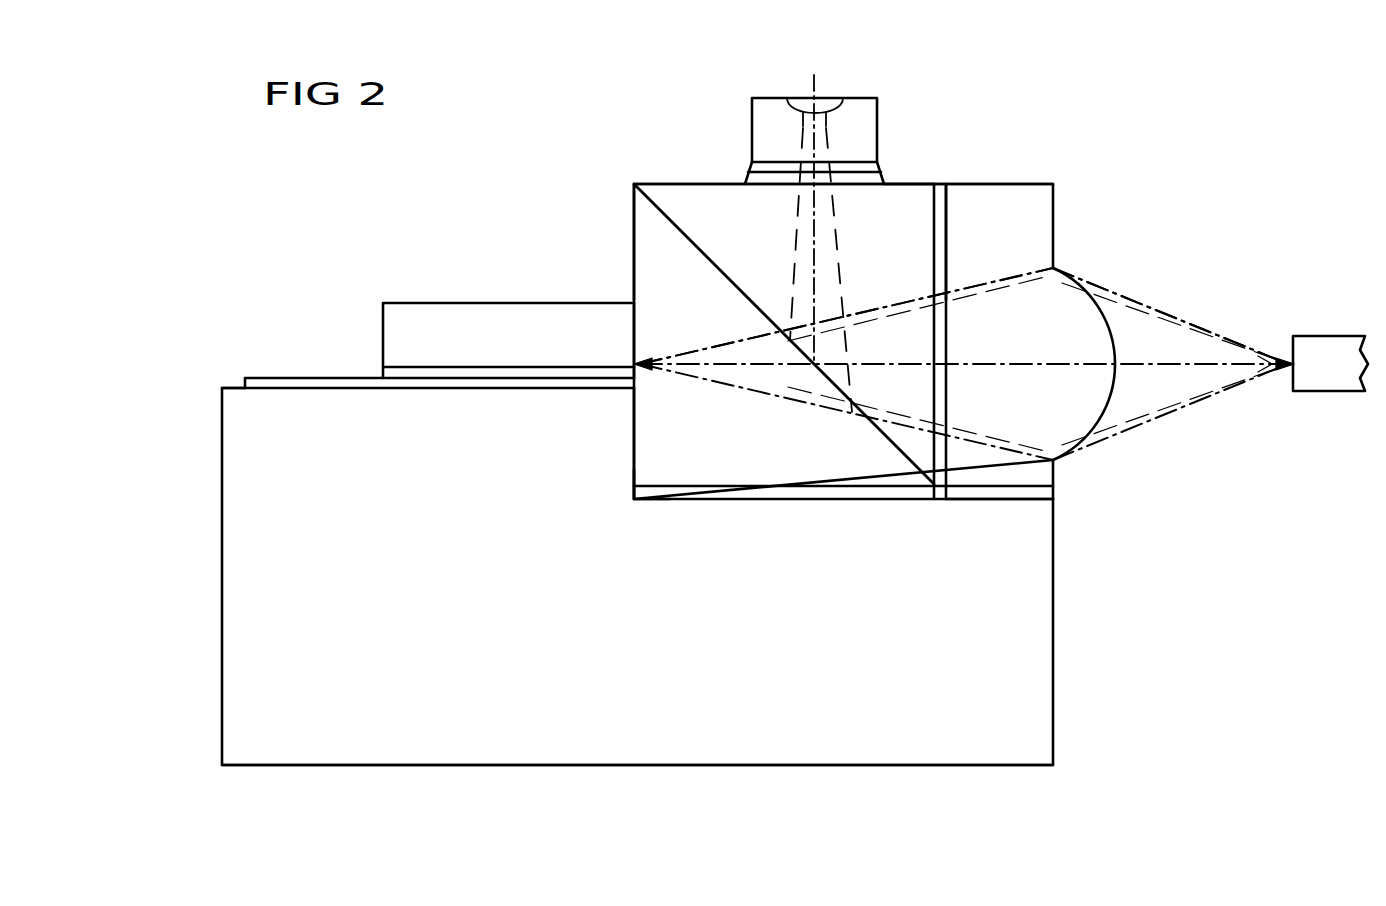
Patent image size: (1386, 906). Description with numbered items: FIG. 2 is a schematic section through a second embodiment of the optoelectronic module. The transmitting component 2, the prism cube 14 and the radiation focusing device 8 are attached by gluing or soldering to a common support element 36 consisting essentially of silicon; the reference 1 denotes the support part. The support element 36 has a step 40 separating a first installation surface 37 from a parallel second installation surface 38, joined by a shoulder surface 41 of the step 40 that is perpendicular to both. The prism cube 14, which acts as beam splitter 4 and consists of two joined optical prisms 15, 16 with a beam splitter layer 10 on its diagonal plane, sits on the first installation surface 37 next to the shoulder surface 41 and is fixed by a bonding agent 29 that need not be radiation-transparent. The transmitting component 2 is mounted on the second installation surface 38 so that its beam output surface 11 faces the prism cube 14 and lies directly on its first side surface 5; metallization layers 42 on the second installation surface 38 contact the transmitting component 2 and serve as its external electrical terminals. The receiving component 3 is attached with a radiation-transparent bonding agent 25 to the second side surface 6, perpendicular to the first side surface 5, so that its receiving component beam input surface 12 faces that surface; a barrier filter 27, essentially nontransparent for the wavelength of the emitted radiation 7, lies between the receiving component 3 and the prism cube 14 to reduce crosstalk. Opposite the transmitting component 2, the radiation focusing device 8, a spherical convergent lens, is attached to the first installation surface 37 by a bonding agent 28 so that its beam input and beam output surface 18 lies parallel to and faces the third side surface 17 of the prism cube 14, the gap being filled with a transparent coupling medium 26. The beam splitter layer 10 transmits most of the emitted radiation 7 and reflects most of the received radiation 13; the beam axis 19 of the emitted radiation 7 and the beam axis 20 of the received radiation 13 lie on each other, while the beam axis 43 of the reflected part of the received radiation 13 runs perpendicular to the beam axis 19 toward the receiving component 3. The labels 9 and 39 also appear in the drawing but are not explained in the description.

The support part 1 is at (1055, 202).
The transmitting component 2 is at (410, 318).
The receiving component 3 is at (858, 97).
The beam splitter 4 is at (673, 167).
The prism cube 14 is at (846, 316).
The first side surface 5 is at (634, 248).
The second side surface 6 is at (706, 182).
The emitted radiation 7 is at (762, 400).
The radiation focusing device 8 is at (1115, 364).
The target 9 is at (1338, 340).
The beam splitter layer 10 is at (702, 255).
The beam output surface 11 is at (634, 334).
The receiving component beam input surface 12 is at (860, 160).
The received radiation 13 is at (1182, 405).
The optical prism 15 is at (901, 205).
The optical prism 16 is at (641, 213).
The third side surface 17 is at (932, 245).
The beam input and beam output surface 18 is at (947, 250).
The beam axis of the emitted radiation 19 is at (1180, 364).
The beam axis of the received radiation 20 is at (1170, 316).
The radiation-transparent bonding agent 25 is at (768, 185).
The transparent coupling medium 26 is at (940, 183).
The barrier filter 27 is at (748, 170).
The bonding agent 28 is at (1006, 492).
The bonding agent 29 is at (824, 488).
The support element 36 is at (688, 713).
The first installation surface 37 is at (963, 500).
The second installation surface 38 is at (240, 379).
The base bottom 39 is at (878, 767).
The step 40 is at (622, 510).
The shoulder surface 41 is at (634, 447).
The metallization layers 42 is at (280, 385).
The beam axis of the reflected received radiation 43 is at (814, 78).